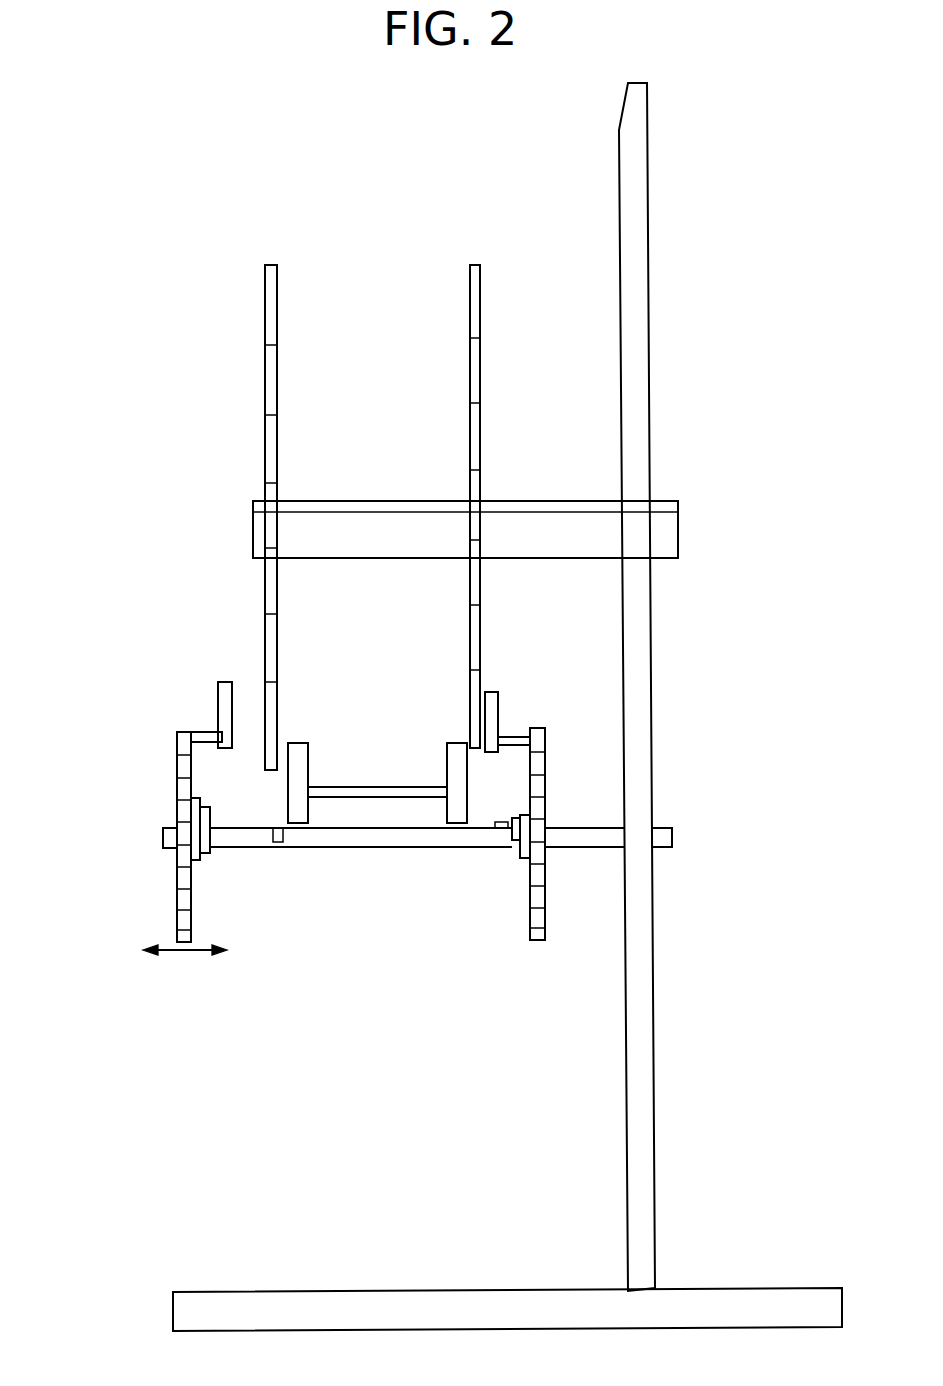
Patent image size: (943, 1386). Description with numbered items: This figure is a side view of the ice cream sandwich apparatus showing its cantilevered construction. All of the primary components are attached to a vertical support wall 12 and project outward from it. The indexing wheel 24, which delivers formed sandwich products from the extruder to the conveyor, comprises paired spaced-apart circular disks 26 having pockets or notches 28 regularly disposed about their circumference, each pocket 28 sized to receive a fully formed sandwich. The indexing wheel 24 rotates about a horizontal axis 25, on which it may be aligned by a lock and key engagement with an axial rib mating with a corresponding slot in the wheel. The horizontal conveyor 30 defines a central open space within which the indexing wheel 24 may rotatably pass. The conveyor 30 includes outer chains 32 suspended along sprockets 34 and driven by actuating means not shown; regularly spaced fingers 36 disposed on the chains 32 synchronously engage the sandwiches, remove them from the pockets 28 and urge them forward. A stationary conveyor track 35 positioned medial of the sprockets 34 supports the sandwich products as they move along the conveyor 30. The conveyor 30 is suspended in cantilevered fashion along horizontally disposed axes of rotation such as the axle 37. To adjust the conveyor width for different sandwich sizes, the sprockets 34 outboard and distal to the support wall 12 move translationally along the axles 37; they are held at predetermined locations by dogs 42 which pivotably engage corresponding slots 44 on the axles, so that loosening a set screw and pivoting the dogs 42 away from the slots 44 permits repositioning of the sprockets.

The vertical support wall 12 is at (642, 410).
The indexing wheel 24 is at (246, 459).
The horizontal axis 25 is at (543, 513).
The circular disks 26 is at (356, 496).
The pockets or notches 28 is at (472, 370).
The horizontal conveyor 30 is at (148, 884).
The outer chains 32 is at (177, 742).
The sprockets 34 is at (185, 797).
The stationary conveyor track 35 is at (306, 752).
The fingers 36 is at (218, 690).
The axle 37 is at (383, 838).
The dogs 42 is at (208, 848).
The slots 44 is at (212, 830).